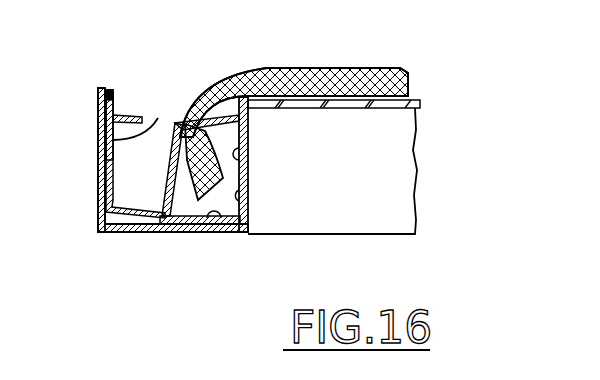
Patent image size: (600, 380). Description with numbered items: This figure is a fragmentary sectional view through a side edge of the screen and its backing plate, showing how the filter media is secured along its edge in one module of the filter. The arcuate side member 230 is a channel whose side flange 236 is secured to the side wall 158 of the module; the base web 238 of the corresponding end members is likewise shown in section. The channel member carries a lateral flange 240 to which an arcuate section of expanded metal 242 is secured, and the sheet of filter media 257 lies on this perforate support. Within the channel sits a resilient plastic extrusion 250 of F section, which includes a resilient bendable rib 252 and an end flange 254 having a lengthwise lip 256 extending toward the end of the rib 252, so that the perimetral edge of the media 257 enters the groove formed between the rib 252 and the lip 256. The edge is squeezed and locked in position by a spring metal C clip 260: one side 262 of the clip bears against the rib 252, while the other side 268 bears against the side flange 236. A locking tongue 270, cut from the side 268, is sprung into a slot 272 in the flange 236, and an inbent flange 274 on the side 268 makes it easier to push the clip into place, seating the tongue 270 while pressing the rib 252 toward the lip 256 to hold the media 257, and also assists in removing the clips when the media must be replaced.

The side wall 158 is at (98, 224).
The arcuate side member 230 is at (195, 232).
The side flange 236 is at (118, 90).
The base web 238 is at (218, 222).
The lateral flange 240 is at (353, 68).
The expanded metal 242 is at (380, 108).
The resilient plastic extrusion 250 is at (247, 160).
The resilient bendable rib 252 is at (186, 124).
The end flange 254 is at (247, 193).
The lengthwise lip 256 is at (248, 137).
The filter media 257 is at (307, 70).
The spring metal C clip 260 is at (152, 120).
The clip side 262 is at (168, 152).
The clip side 268 is at (113, 202).
The locking tongue 270 is at (103, 167).
The slot 272 is at (100, 147).
The inbent flange 274 is at (123, 114).